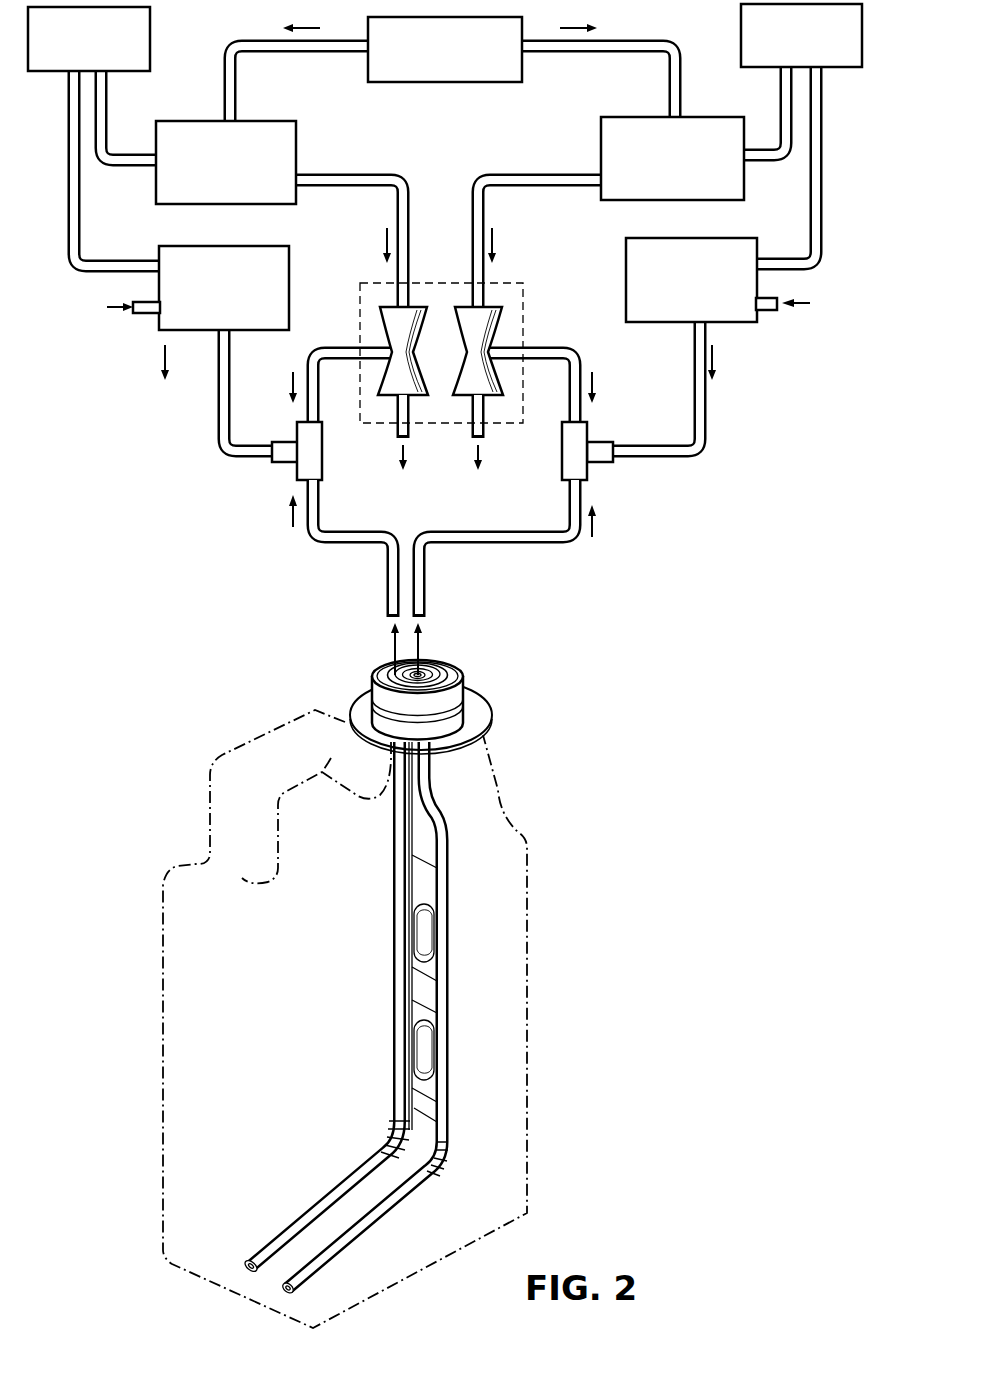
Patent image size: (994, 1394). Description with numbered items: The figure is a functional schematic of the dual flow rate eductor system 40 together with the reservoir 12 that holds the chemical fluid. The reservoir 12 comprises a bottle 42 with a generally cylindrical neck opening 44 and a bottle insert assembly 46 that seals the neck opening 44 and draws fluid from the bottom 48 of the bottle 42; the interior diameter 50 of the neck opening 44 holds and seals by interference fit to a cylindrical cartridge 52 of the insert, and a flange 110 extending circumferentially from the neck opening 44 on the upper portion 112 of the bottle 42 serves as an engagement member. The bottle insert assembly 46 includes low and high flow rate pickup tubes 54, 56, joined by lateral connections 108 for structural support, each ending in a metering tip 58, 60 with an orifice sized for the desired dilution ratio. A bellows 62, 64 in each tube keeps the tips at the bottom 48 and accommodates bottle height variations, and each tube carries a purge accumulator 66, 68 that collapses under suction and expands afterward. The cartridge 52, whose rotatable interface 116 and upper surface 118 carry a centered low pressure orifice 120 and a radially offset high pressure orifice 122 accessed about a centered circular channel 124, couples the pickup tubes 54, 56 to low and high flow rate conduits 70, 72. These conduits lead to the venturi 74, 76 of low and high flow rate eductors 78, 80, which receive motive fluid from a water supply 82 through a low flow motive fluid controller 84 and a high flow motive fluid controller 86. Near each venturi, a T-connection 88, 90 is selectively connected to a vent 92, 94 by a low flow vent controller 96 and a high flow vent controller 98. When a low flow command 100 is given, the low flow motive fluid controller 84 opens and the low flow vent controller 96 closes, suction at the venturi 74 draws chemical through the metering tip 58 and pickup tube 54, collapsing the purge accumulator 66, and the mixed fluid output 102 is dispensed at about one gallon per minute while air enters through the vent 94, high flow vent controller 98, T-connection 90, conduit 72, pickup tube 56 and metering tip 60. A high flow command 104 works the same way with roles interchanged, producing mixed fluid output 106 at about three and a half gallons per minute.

The reservoir 12 is at (565, 979).
The dual flow rate eductor system 40 is at (186, 571).
The bottle 42 is at (530, 930).
The neck opening 44 is at (463, 700).
The bottle insert assembly 46 is at (357, 1029).
The bottom 48 is at (338, 1288).
The interior diameter 50 is at (457, 675).
The cartridge 52 is at (443, 670).
The low flow rate pickup tube 54 is at (388, 1217).
The high flow rate pickup tube 56 is at (327, 1197).
The metering tip 58 is at (292, 1289).
The metering tip 60 is at (247, 1266).
The bellows 62 is at (446, 1163).
The bellows 64 is at (390, 1135).
The purge accumulator 66 is at (420, 929).
The purge accumulator 68 is at (422, 1050).
The low flow rate conduit 70 is at (558, 547).
The high flow rate conduit 72 is at (352, 547).
The venturi 74 is at (490, 333).
The venturi 76 is at (398, 342).
The low flow rate eductor 78 is at (492, 305).
The high flow rate eductor 80 is at (390, 303).
The water supply 82 is at (457, 86).
The low flow motive fluid controller 84 is at (601, 148).
The high flow motive fluid controller 86 is at (298, 141).
The T-connection 88 is at (604, 460).
The T-connection 90 is at (293, 464).
The vent 92 is at (778, 314).
The vent 94 is at (143, 315).
The low flow vent controller 96 is at (683, 325).
The high flow vent controller 98 is at (271, 331).
The low flow command 100 is at (741, 62).
The mixed fluid output 102 is at (488, 448).
The high flow command 104 is at (152, 58).
The mixed fluid output 106 is at (398, 450).
The lateral connections 108 is at (407, 768).
The flange 110 is at (478, 716).
The upper portion 112 is at (505, 782).
The rotatable interface 116 is at (463, 687).
The upper surface 118 is at (440, 663).
The low pressure orifice 120 is at (417, 670).
The high pressure orifice 122 is at (397, 675).
The channel 124 is at (410, 657).